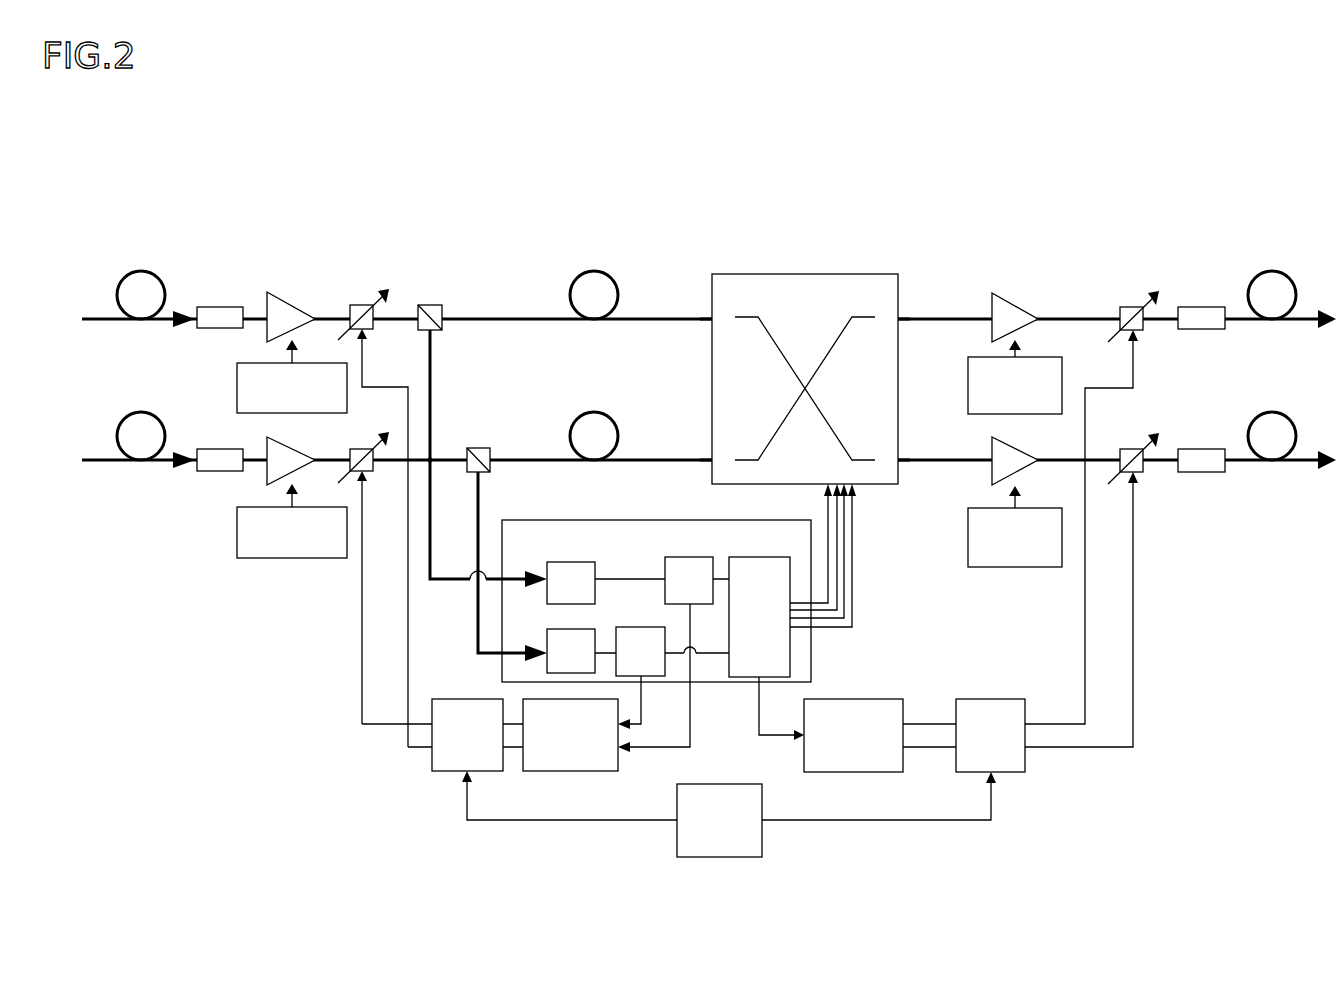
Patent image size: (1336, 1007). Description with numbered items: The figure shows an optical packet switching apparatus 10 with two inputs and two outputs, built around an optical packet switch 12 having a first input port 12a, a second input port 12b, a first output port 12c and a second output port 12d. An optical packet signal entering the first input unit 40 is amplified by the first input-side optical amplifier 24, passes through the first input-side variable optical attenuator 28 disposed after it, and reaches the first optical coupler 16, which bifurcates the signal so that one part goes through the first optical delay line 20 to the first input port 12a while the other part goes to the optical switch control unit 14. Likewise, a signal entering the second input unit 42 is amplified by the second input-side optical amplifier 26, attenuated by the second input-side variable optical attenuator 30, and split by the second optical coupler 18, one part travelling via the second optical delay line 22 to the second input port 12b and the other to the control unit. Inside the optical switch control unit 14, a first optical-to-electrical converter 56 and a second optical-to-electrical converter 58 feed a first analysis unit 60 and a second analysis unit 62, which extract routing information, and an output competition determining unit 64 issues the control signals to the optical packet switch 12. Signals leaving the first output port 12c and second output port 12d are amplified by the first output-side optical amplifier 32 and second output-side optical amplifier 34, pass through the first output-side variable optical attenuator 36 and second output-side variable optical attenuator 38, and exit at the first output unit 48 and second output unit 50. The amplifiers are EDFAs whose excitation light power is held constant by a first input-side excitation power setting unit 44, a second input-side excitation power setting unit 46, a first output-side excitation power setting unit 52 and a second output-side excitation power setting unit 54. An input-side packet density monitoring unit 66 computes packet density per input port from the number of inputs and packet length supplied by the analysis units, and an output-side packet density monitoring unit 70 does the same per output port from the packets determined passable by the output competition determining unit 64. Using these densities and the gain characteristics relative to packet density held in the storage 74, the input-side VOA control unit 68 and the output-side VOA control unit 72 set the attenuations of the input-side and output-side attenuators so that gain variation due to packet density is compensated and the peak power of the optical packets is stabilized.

The optical packet switching apparatus 10 is at (650, 214).
The optical packet switch 12 is at (815, 274).
The first input port 12a is at (712, 315).
The second input port 12b is at (712, 456).
The first output port 12c is at (900, 322).
The second output port 12d is at (900, 463).
The optical switch control unit 14 is at (641, 520).
The first optical coupler 16 is at (431, 304).
The second optical coupler 18 is at (479, 447).
The first optical delay line 20 is at (594, 271).
The second optical delay line 22 is at (594, 412).
The first input-side optical amplifier 24 is at (288, 302).
The second input-side optical amplifier 26 is at (283, 448).
The first input-side variable optical attenuator 28 is at (360, 300).
The second input-side variable optical attenuator 30 is at (355, 447).
The first output-side optical amplifier 32 is at (1015, 305).
The second output-side optical amplifier 34 is at (1020, 452).
The first output-side variable optical attenuator 36 is at (1128, 306).
The second output-side variable optical attenuator 38 is at (1128, 448).
The first input unit 40 is at (216, 307).
The second input unit 42 is at (212, 471).
The first input-side excitation power setting unit 44 is at (237, 392).
The second input-side excitation power setting unit 46 is at (237, 536).
The first output unit 48 is at (1200, 307).
The second output unit 50 is at (1200, 449).
The first output-side excitation power setting unit 52 is at (968, 388).
The second output-side excitation power setting unit 54 is at (968, 538).
The first optical-to-electrical converter 56 is at (557, 562).
The second optical-to-electrical converter 58 is at (566, 631).
The first analysis unit 60 is at (698, 557).
The second analysis unit 62 is at (639, 627).
The output competition determining unit 64 is at (760, 557).
The input-side packet density monitoring unit 66 is at (570, 771).
The input-side VOA control unit 68 is at (466, 699).
The output-side packet density monitoring unit 70 is at (852, 699).
The output-side VOA control unit 72 is at (988, 699).
The storage 74 is at (717, 784).